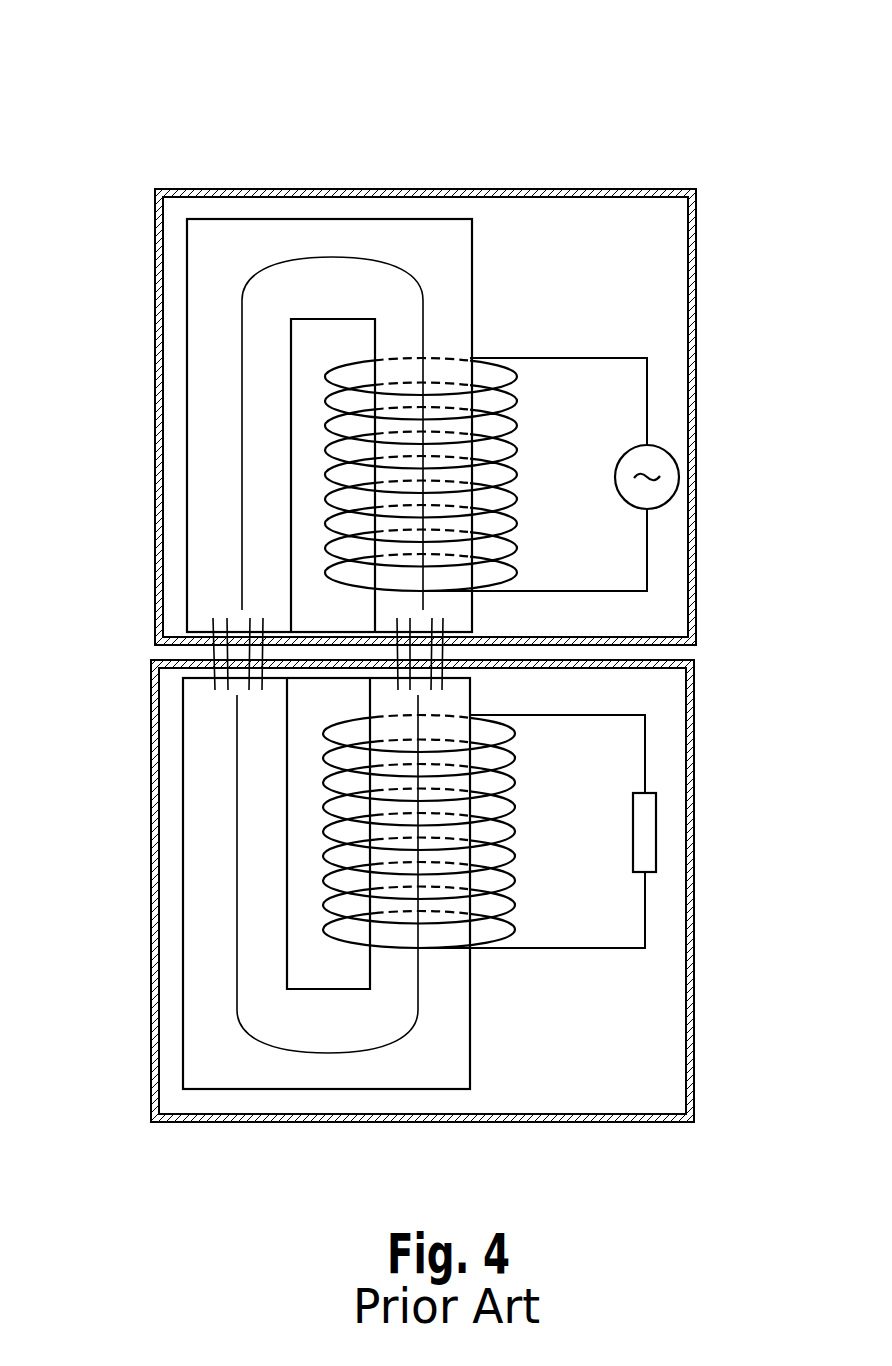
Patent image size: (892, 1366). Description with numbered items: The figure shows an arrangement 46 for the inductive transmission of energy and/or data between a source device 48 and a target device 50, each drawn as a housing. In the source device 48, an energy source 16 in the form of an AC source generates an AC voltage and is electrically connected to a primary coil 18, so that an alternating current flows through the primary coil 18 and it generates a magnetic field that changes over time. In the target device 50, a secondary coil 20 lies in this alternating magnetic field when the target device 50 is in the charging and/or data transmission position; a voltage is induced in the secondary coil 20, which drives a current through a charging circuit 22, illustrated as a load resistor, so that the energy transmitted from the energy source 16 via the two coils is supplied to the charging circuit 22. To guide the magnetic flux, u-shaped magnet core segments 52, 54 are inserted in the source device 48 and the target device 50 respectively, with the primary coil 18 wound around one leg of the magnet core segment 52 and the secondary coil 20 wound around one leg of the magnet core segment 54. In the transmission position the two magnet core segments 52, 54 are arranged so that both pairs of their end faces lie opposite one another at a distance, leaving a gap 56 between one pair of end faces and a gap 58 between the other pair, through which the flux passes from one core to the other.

The arrangement 46 is at (606, 80).
The source device 48 is at (696, 297).
The target device 50 is at (690, 703).
The magnet core segment 52 is at (448, 262).
The magnet core segment 54 is at (445, 700).
The primary coil 18 is at (517, 438).
The secondary coil 20 is at (516, 791).
The energy source 16 is at (669, 478).
The charging circuit 22 is at (645, 833).
The gap 56 is at (176, 652).
The gap 58 is at (485, 652).